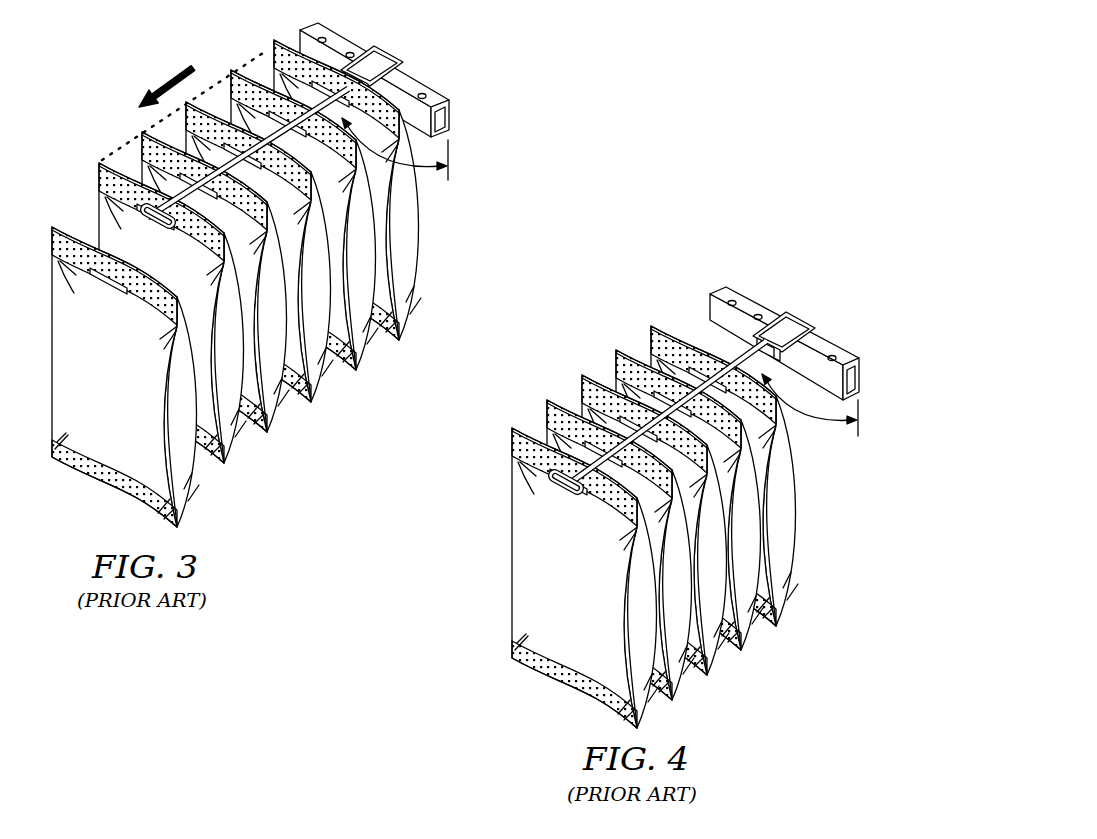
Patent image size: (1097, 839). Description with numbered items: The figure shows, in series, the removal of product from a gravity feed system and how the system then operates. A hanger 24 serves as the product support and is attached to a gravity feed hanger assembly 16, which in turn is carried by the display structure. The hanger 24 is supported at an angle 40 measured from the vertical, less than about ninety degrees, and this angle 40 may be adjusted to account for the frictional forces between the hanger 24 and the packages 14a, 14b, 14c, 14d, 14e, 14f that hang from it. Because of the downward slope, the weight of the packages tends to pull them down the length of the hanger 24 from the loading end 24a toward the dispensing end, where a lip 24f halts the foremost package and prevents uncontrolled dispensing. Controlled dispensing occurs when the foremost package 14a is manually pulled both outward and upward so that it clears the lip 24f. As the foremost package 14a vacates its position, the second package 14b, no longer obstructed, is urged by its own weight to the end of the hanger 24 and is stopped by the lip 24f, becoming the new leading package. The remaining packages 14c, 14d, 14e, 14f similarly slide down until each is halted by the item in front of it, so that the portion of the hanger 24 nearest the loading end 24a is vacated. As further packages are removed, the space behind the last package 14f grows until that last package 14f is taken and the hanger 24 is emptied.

In FIG. 3, the foremost package 14a is at (178, 526).
In FIG. 3, the second package 14b is at (225, 462).
In FIG. 4, the second package 14b is at (516, 656).
In FIG. 3, the package 14c is at (268, 431).
In FIG. 4, the package 14c is at (673, 699).
In FIG. 3, the package 14d is at (312, 401).
In FIG. 4, the package 14d is at (708, 674).
In FIG. 3, the package 14e is at (357, 369).
In FIG. 4, the package 14e is at (742, 649).
In FIG. 3, the last package 14f is at (400, 339).
In FIG. 4, the last package 14f is at (777, 625).
In FIG. 4, the gravity feed hanger assembly 16 is at (807, 301).
In FIG. 3, the hanger 24 is at (300, 90).
In FIG. 4, the hanger 24 is at (710, 351).
In FIG. 3, the loading end 24a is at (410, 79).
In FIG. 4, the loading end 24a is at (823, 345).
In FIG. 3, the lip 24f is at (140, 212).
In FIG. 4, the lip 24f is at (552, 485).
In FIG. 3, the angle 40 is at (420, 170).
In FIG. 4, the angle 40 is at (826, 421).